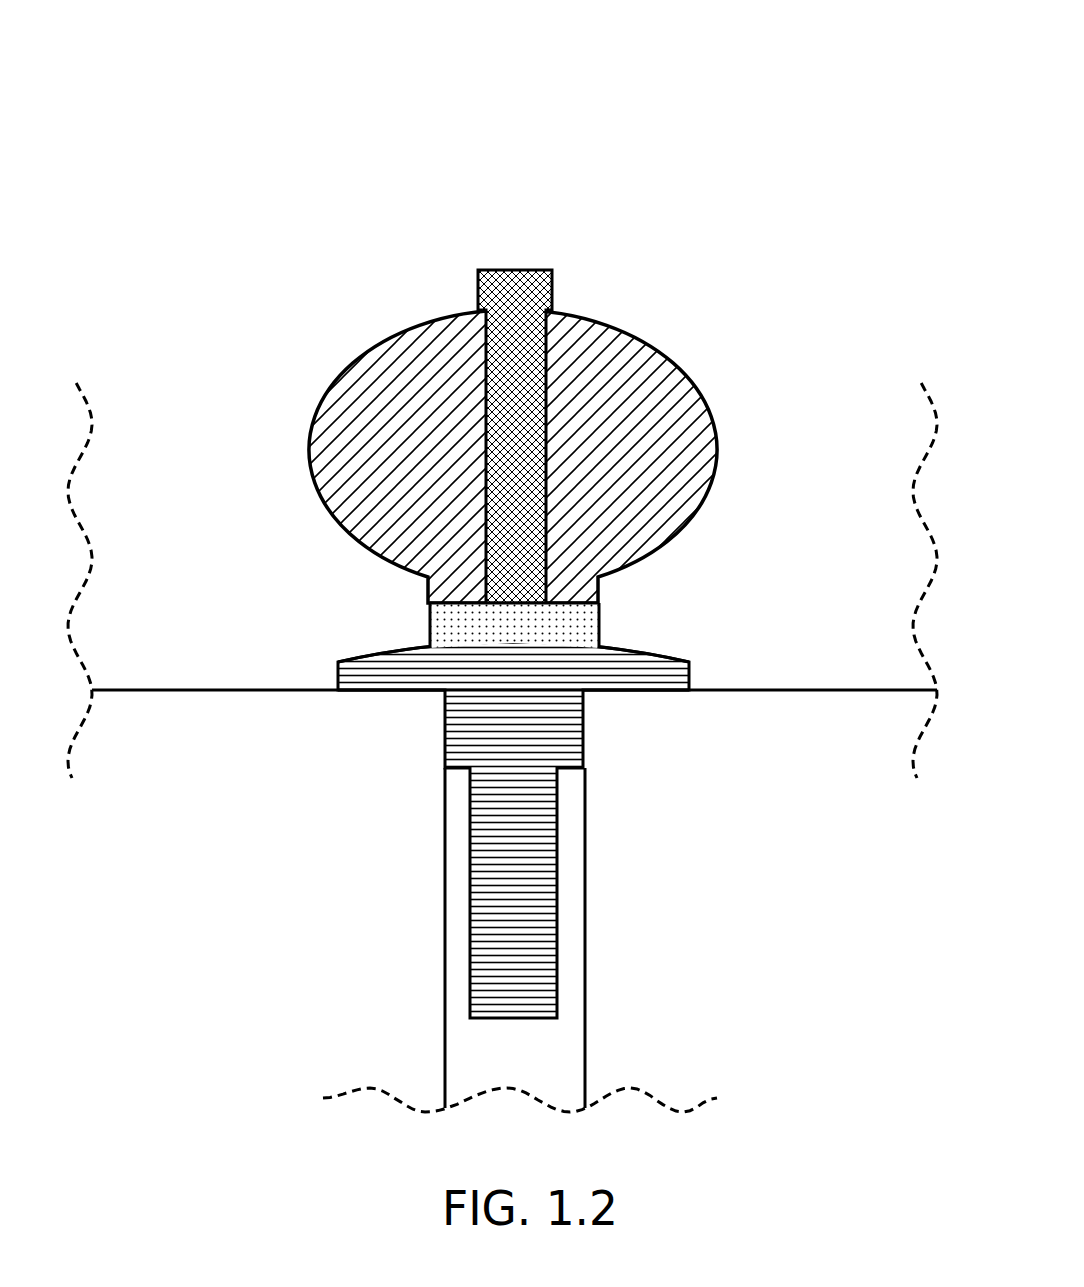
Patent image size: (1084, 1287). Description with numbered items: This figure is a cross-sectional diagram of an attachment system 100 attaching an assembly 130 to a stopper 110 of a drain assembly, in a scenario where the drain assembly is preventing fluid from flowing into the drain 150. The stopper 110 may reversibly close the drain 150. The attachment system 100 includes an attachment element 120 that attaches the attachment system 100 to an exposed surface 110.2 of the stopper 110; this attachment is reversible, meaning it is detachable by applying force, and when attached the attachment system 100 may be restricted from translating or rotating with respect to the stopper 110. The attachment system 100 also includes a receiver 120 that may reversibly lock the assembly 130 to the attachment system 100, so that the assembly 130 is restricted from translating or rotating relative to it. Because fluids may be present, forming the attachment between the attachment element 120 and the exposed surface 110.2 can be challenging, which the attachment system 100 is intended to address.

The attachment system 100 is at (240, 192).
The stopper 110 is at (483, 775).
The exposed surface 110.2 is at (598, 597).
The attachment element 120 is at (553, 273).
The assembly 130 is at (433, 367).
The drain 150 is at (545, 1055).